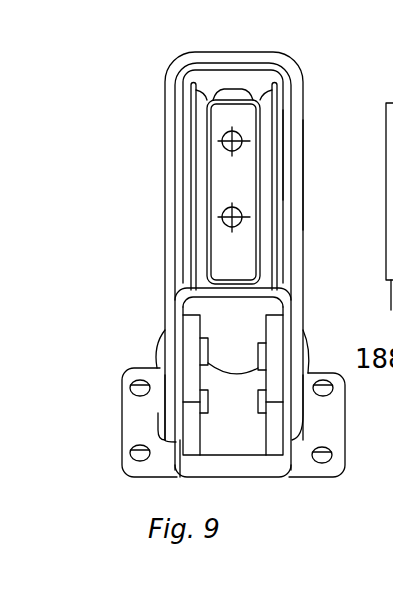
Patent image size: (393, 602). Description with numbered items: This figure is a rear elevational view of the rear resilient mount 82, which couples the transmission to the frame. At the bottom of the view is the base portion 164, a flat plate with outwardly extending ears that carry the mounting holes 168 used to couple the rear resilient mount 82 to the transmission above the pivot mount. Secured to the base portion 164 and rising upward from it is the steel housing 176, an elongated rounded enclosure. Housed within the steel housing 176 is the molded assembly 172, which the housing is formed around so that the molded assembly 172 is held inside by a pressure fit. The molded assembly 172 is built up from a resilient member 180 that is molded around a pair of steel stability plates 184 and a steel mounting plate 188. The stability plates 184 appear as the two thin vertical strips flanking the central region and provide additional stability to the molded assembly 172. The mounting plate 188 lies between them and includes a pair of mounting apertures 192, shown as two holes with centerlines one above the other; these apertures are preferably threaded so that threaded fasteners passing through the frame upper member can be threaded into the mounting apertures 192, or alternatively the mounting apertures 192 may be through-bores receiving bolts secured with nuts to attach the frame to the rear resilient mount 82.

The rear resilient mount 82 is at (148, 176).
The molded assembly 172 is at (285, 104).
The steel housing 176 is at (302, 217).
The resilient member 180 is at (287, 170).
The stability plates 184 is at (191, 247).
The mounting plate 188 is at (222, 125).
The mounting apertures 192 is at (222, 150).
The base portion 164 is at (130, 420).
The mounting holes 168 is at (140, 380).